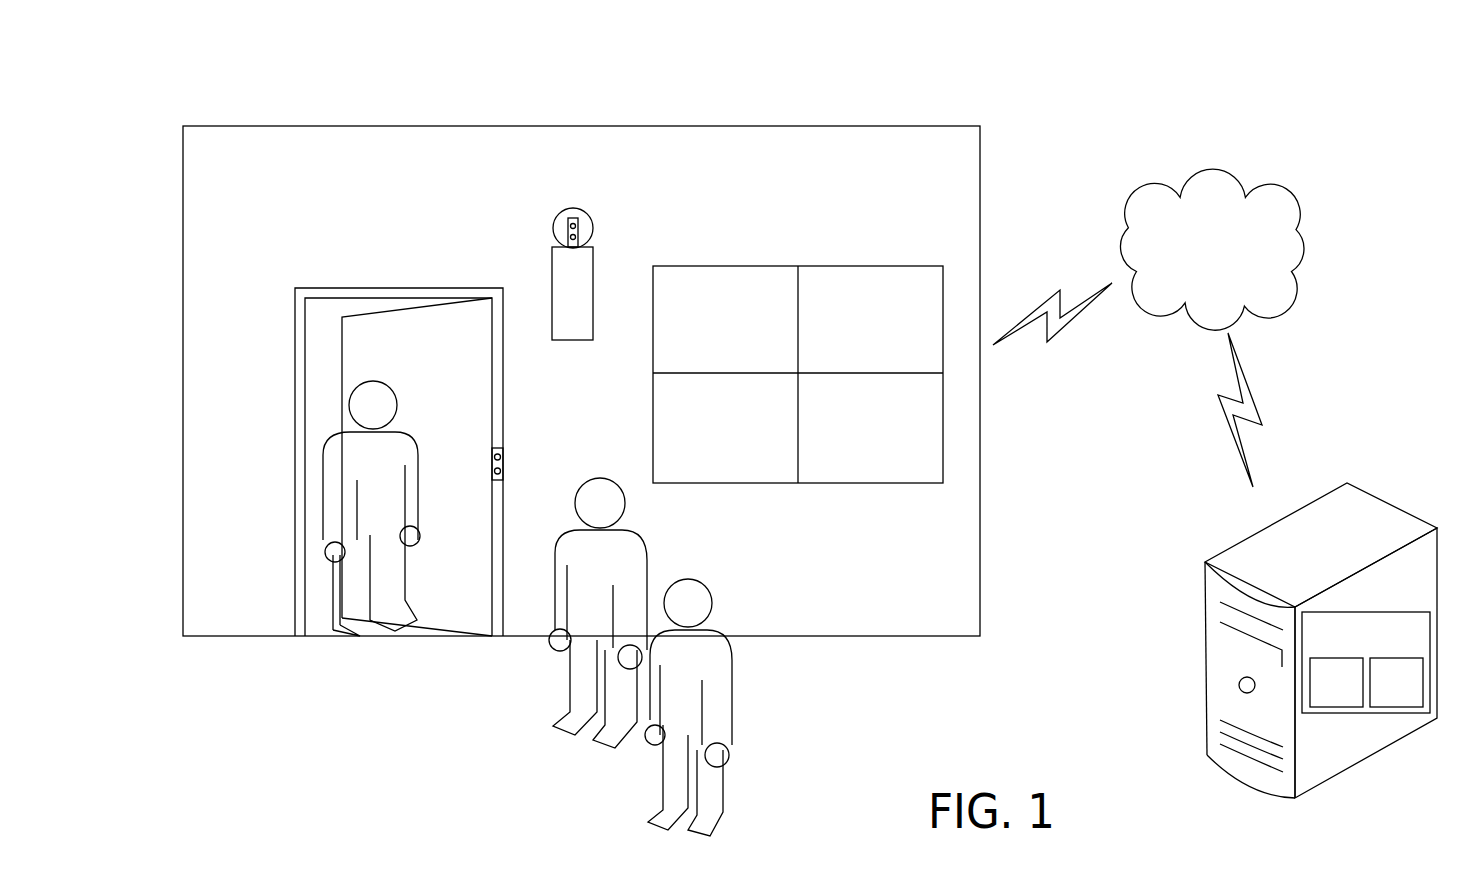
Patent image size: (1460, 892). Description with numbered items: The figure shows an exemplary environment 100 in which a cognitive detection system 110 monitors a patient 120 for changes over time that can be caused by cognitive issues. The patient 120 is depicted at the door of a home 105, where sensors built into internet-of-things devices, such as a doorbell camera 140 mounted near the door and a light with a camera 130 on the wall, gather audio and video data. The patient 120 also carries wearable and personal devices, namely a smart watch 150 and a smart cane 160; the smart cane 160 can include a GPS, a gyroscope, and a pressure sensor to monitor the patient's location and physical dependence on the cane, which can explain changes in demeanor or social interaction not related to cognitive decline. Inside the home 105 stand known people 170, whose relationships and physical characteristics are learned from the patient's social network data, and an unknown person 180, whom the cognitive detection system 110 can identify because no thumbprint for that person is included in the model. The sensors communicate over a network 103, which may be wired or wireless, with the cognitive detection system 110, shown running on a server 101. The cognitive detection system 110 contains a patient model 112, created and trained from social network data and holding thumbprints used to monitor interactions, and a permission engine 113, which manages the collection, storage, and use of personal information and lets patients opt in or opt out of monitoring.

The environment 100 is at (298, 62).
The server 101 is at (1285, 640).
The network 103 is at (1190, 263).
The home 105 is at (876, 121).
The cognitive detection system 110 is at (1344, 652).
The patient model 112 is at (1317, 696).
The permission engine 113 is at (1377, 696).
The patient 120 is at (247, 508).
The light with a camera 130 is at (581, 207).
The doorbell camera 140 is at (489, 493).
The smart watch 150 is at (327, 542).
The smart cane 160 is at (330, 602).
The known people 170 is at (594, 574).
The unknown people 180 is at (712, 662).